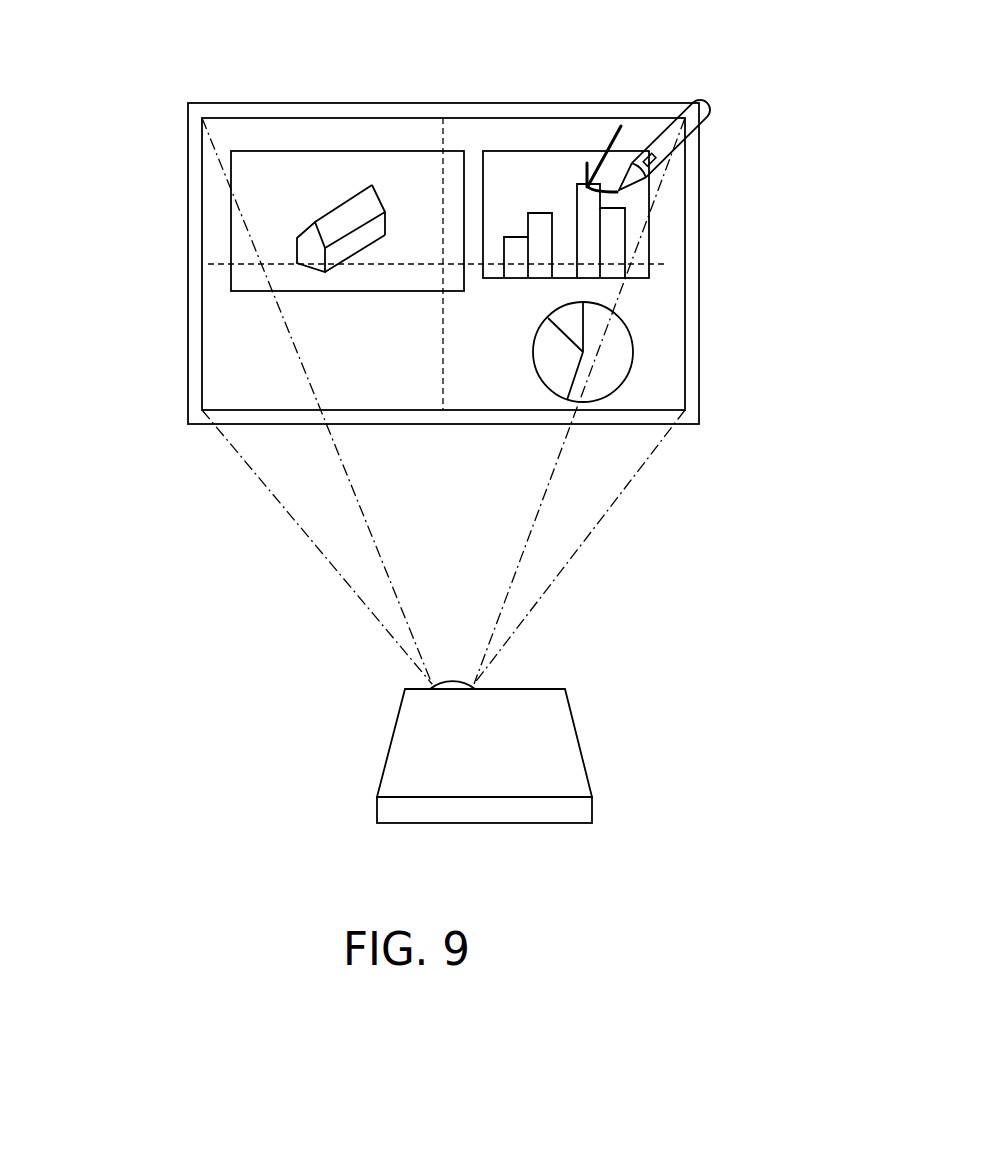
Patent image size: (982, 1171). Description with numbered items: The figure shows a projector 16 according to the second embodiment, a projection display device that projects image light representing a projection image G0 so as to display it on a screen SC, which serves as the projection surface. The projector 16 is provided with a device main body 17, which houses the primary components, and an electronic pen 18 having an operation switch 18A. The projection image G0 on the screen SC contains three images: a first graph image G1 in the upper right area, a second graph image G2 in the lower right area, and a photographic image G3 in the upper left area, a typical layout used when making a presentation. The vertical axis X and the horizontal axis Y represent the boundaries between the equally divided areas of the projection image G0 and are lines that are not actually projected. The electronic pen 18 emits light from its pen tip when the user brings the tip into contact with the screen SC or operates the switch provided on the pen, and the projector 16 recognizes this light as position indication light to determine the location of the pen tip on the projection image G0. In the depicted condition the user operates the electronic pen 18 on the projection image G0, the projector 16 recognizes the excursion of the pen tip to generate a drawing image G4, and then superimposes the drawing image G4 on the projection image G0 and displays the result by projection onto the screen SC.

The projector 16 is at (650, 785).
The device main body 17 is at (385, 760).
The electronic pen 18 is at (712, 97).
The operation switch 18A is at (662, 146).
The screen SC is at (653, 103).
The projection image G0 is at (688, 190).
The first graph image G1 is at (652, 227).
The second graph image G2 is at (631, 327).
The photographic image G3 is at (230, 227).
The drawing image G4 is at (607, 138).
The vertical axis X is at (665, 264).
The horizontal axis Y is at (443, 146).